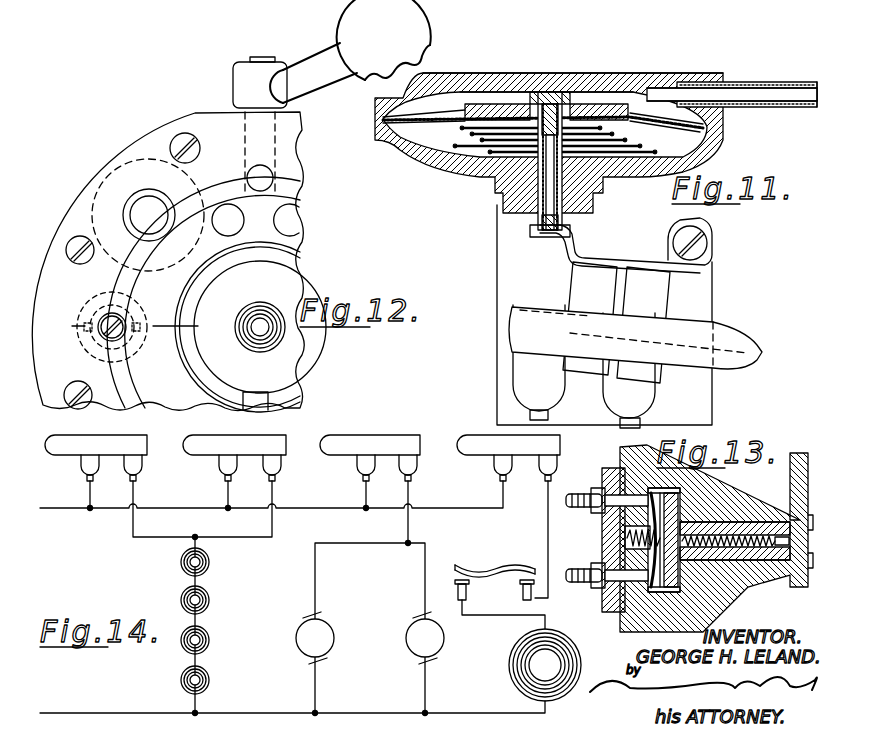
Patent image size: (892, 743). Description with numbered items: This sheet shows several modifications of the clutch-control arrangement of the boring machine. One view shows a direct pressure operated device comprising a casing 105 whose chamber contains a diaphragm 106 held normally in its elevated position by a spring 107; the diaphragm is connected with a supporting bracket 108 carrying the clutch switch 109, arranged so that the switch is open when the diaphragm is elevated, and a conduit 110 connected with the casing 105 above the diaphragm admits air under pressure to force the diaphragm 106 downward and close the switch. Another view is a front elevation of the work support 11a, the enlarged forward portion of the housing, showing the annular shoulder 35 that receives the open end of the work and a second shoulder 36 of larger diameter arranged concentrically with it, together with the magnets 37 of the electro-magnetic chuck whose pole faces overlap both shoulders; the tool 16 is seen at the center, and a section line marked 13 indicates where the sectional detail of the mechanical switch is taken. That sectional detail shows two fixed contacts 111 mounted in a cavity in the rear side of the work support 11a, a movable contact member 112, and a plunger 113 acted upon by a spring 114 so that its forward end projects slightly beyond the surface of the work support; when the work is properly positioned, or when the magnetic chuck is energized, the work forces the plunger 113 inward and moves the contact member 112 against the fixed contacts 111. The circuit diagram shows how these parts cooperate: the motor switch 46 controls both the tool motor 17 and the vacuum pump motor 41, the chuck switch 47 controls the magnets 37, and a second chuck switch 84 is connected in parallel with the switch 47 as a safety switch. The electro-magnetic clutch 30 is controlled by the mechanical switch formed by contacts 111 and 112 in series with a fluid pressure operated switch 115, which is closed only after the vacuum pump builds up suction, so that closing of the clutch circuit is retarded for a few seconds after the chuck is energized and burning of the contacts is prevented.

In FIG. 12, the work support 11a is at (191, 126).
In FIG. 13, the work support 11a is at (746, 520).
In FIG. 12, the reciprocatory carriage 13 is at (131, 327).
In FIG. 12, the tool 16 is at (259, 319).
In FIG. 14, the electric motor 17 is at (430, 638).
In FIG. 14, the electro-magnetic clutch 30 is at (518, 677).
In FIG. 12, the annular shoulder 35 is at (150, 237).
In FIG. 13, the annular shoulder 35 is at (810, 530).
In FIG. 12, the second shoulder 36 is at (134, 241).
In FIG. 13, the second shoulder 36 is at (810, 562).
In FIG. 12, the magnets of the electro-magnetic chuck 37 is at (151, 207).
In FIG. 14, the magnets of the electro-magnetic chuck 37 is at (204, 598).
In FIG. 14, the motor 41 is at (318, 628).
In FIG. 14, the motor switch 46 is at (377, 448).
In FIG. 14, the chuck switch 47 is at (138, 444).
In FIG. 14, the second chuck switch 84 is at (270, 445).
In FIG. 11, the casing 105 is at (615, 80).
In FIG. 11, the diaphragm 106 is at (645, 124).
In FIG. 11, the spring 107 is at (482, 146).
In FIG. 11, the supporting bracket 108 is at (622, 265).
In FIG. 11, the clutch switch 109 is at (730, 340).
In FIG. 11, the conduit 110 is at (768, 82).
In FIG. 13, the fixed contacts 111 is at (632, 576).
In FIG. 14, the fixed contacts 111 is at (521, 592).
In FIG. 13, the movable contact member 112 is at (628, 468).
In FIG. 14, the movable contact member 112 is at (490, 566).
In FIG. 12, the plunger 113 is at (108, 319).
In FIG. 13, the plunger 113 is at (746, 566).
In FIG. 13, the spring 114 is at (680, 503).
In FIG. 14, the fluid pressure operated switch 115 is at (547, 447).